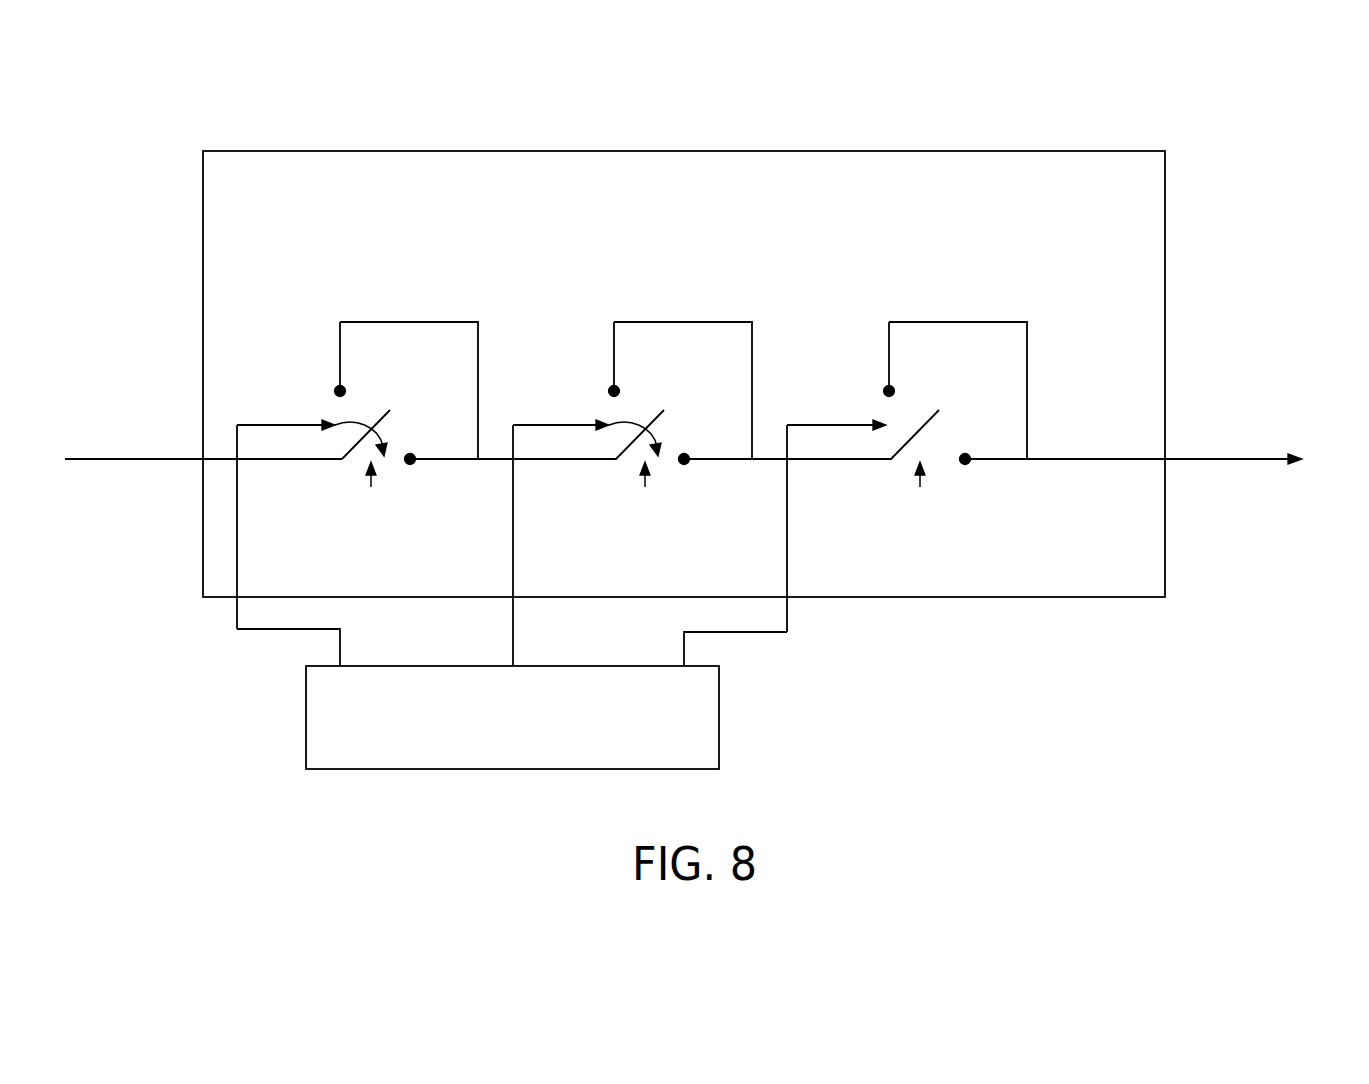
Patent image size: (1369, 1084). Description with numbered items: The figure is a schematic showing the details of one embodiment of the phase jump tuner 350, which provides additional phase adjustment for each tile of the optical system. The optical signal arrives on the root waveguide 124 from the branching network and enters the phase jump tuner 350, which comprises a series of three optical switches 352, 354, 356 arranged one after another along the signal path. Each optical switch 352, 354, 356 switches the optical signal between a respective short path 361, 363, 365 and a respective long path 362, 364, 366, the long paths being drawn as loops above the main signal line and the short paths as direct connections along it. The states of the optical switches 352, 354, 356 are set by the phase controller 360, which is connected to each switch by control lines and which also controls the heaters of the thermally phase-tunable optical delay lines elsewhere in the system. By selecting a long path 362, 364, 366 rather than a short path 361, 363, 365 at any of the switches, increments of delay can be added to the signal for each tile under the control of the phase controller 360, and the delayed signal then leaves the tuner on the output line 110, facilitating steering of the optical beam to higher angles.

The output signal line 110 is at (1268, 459).
The root waveguide 124 is at (100, 459).
The phase jump tuner 350 is at (1165, 597).
The optical switch 352 is at (371, 487).
The optical switch 354 is at (645, 487).
The optical switch 356 is at (920, 487).
The phase controller 360 is at (561, 594).
The short path 361 is at (428, 455).
The long path 362 is at (380, 322).
The short path 363 is at (702, 455).
The long path 364 is at (654, 322).
The short path 365 is at (977, 455).
The long path 366 is at (929, 322).